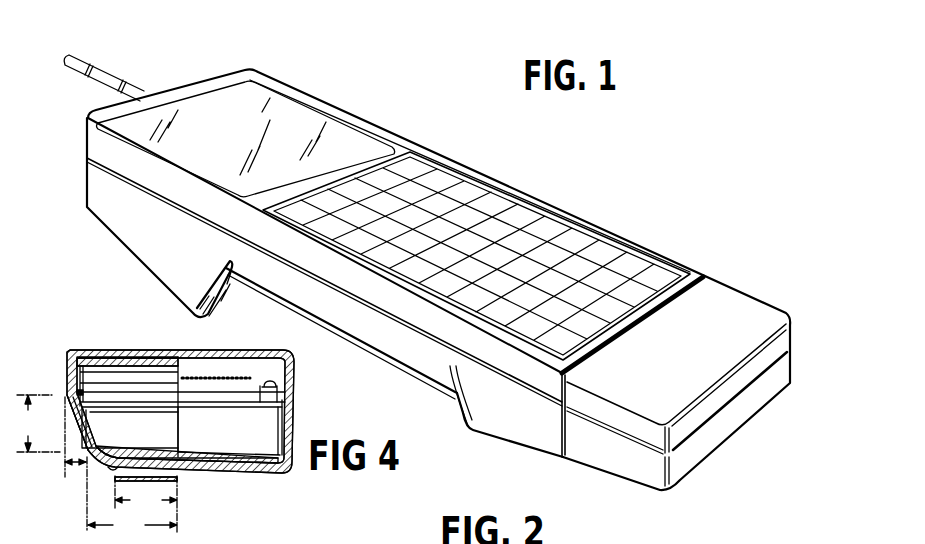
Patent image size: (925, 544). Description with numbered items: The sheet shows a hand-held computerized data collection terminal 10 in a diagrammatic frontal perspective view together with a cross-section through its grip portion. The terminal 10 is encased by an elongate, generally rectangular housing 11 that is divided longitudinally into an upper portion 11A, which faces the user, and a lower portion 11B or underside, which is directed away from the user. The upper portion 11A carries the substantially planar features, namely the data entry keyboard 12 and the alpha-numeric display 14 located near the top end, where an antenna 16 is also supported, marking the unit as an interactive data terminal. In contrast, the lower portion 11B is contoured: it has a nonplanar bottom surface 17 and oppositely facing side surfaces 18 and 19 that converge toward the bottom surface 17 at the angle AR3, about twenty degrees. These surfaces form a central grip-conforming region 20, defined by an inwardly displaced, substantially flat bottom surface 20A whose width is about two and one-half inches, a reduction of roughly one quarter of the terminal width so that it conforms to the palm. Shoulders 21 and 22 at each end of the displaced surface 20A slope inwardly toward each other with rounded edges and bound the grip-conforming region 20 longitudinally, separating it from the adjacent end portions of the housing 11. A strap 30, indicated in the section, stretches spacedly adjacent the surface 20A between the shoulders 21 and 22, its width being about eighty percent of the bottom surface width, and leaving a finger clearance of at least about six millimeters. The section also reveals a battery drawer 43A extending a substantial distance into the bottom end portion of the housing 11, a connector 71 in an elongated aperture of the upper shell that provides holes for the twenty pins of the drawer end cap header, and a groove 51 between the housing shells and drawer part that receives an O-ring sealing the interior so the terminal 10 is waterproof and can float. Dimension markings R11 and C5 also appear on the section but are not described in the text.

In FIG. 1, the hand-held computerized data collection terminal 10 is at (221, 62).
In FIG. 1, the housing 11 is at (724, 439).
In FIG. 1, the upper portion of the housing 11A is at (733, 296).
In FIG. 4, the upper portion of the housing 11A is at (192, 350).
In FIG. 1, the lower portion of the housing 11B is at (548, 461).
In FIG. 4, the lower portion of the housing 11B is at (273, 474).
In FIG. 1, the data entry keyboard 12 is at (538, 206).
In FIG. 1, the alpha-numeric display 14 is at (296, 100).
In FIG. 1, the antenna 16 is at (114, 74).
In FIG. 4, the contoured bottom surface 17 is at (260, 474).
In FIG. 1, the side surface 18 is at (135, 224).
In FIG. 4, the side surface 19 is at (294, 428).
In FIG. 1, the grip-conforming region 20 is at (362, 342).
In FIG. 4, the inwardly displaced bottom surface 20A is at (125, 460).
In FIG. 1, the shoulder 21 is at (196, 315).
In FIG. 1, the shoulder 22 is at (462, 412).
In FIG. 4, the strap 30 is at (178, 482).
In FIG. 4, the battery drawer 43A is at (170, 433).
In FIG. 4, the groove 51 is at (67, 397).
In FIG. 4, the connector 71 is at (230, 373).
In FIG. 4, the corner radius R11 is at (294, 367).
In FIG. 4, the dimension C5 is at (38, 423).
In FIG. 4, the angle of side wall convergence AR3 is at (68, 470).